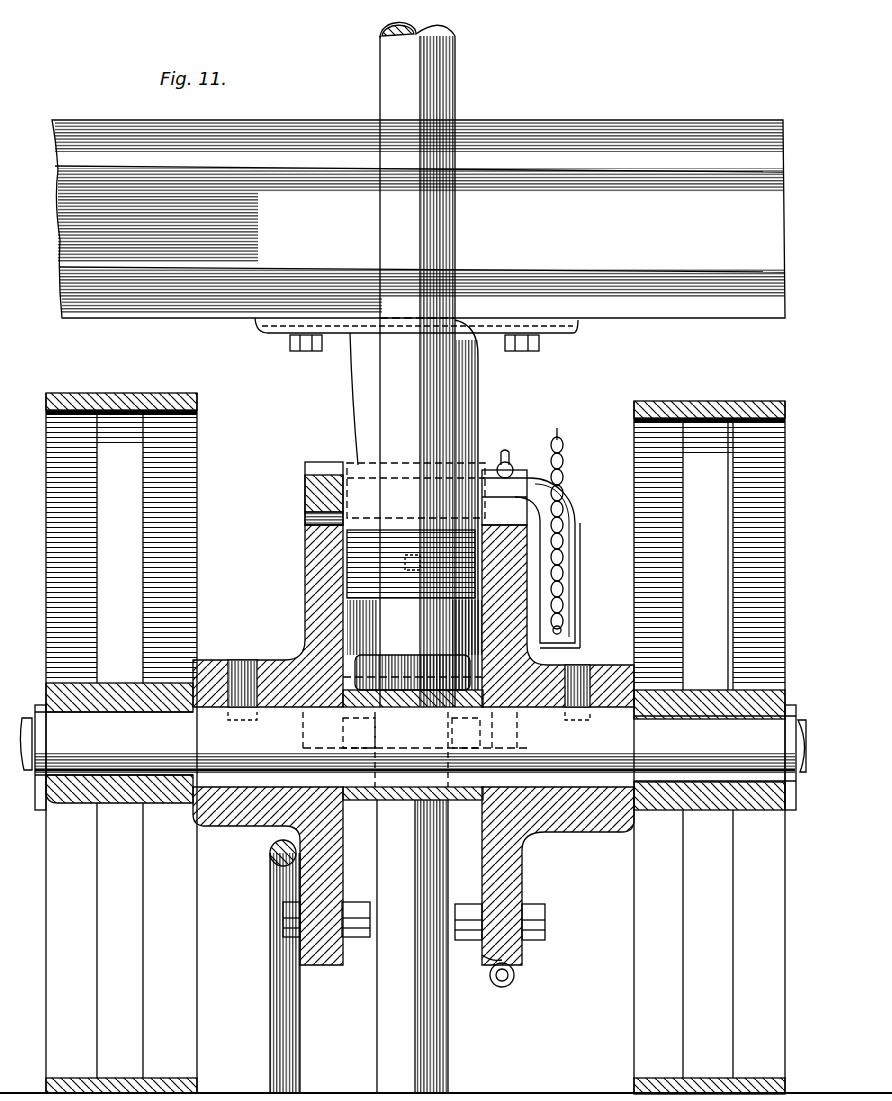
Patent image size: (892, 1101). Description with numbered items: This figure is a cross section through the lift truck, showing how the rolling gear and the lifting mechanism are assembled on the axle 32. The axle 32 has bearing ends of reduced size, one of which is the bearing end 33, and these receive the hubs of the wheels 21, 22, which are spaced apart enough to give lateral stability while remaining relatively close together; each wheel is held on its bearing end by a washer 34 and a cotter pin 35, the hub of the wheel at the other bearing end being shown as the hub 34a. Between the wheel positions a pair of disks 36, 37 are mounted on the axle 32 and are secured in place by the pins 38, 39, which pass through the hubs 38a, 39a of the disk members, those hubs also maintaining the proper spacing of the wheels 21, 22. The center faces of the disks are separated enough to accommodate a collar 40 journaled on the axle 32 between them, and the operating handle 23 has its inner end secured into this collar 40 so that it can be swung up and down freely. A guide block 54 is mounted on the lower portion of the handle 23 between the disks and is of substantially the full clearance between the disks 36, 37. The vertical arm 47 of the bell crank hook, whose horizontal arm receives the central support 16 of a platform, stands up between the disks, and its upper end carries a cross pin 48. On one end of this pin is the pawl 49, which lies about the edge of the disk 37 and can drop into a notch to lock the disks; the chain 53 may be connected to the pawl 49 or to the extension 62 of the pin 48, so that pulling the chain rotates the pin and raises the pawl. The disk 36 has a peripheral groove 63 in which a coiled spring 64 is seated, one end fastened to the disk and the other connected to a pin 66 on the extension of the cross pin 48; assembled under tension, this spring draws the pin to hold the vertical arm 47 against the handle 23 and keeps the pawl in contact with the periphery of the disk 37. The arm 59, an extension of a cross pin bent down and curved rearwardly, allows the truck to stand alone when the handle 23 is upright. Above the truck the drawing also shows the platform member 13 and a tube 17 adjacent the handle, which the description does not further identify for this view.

The beam 13 is at (418, 219).
The tube 17 is at (365, 379).
The operating handle 23 is at (440, 381).
The cross pin 48 is at (481, 478).
The pin 66 is at (512, 462).
The chain 53 is at (566, 458).
The pawl 49 is at (305, 495).
The disk 37 is at (305, 553).
The guide block 54 is at (411, 564).
The vertical arm 47 is at (343, 625).
The pin 39 is at (248, 660).
The pin 38 is at (580, 666).
The extension 62 is at (578, 577).
The cotter pin 35 is at (27, 715).
The bearing end 33 is at (119, 743).
The axle 32 is at (580, 722).
The washer 34 is at (784, 700).
The wheel hub 34a is at (709, 750).
The hub 39a is at (256, 826).
The collar 40 is at (375, 800).
The disk 36 is at (528, 862).
The hub 38a is at (592, 828).
The peripheral groove 63 is at (522, 955).
The coiled spring 64 is at (514, 978).
The wheel 22 is at (222, 995).
The arm 59 is at (285, 1013).
The central support 16 is at (410, 1030).
The wheel 21 is at (632, 1056).